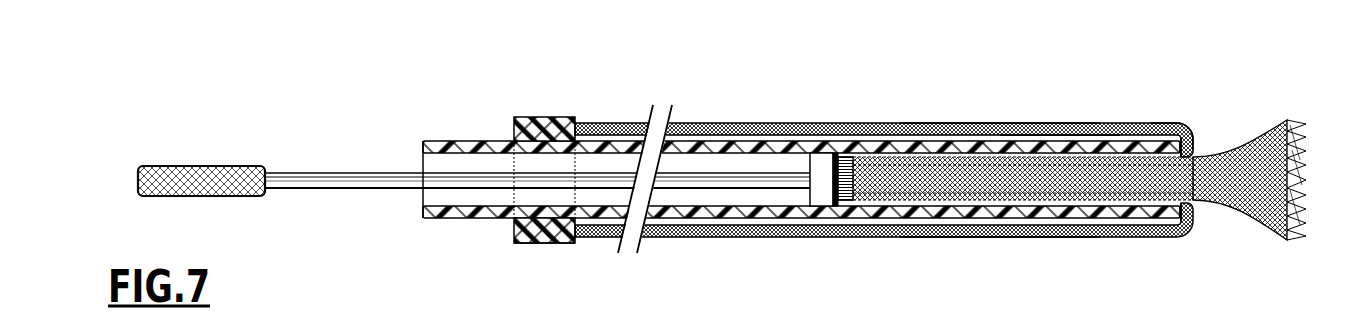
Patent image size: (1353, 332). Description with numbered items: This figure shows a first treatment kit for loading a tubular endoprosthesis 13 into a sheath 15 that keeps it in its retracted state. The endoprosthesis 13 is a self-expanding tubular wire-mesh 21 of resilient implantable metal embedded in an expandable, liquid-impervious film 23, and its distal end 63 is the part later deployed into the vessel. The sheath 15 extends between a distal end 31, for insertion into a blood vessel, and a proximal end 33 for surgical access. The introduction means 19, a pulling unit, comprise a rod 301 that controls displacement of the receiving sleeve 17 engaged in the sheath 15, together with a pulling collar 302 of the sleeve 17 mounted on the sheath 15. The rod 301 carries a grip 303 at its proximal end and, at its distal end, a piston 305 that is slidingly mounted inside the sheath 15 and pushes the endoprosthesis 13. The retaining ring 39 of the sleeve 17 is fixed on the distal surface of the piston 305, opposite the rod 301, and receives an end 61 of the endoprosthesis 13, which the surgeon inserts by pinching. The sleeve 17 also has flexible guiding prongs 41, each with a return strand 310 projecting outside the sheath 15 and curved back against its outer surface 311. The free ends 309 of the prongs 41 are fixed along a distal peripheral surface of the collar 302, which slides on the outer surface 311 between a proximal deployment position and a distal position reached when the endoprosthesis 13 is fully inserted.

The grip 303 is at (196, 172).
The rod 301 is at (390, 187).
The introduction means 19 is at (358, 188).
The proximal end 33 is at (422, 148).
The pulling collar 302 is at (550, 117).
The free ends 309 is at (575, 243).
The outer surface 311 is at (721, 140).
The receiving sleeve 17 is at (974, 123).
The flexible guiding prongs 41 is at (1063, 123).
The tubular endoprosthesis 13 is at (997, 237).
The return strand 310 is at (1164, 123).
The distal end 31 is at (1191, 137).
The piston 305 is at (816, 206).
The retaining ring 39 is at (862, 237).
The end of the endoprosthesis 61 is at (862, 165).
The tubular wire-mesh 21 is at (1111, 180).
The expandable film 23 is at (1258, 145).
The distal end of the endoprosthesis 63 is at (1267, 203).
The sheath 15 is at (637, 125).